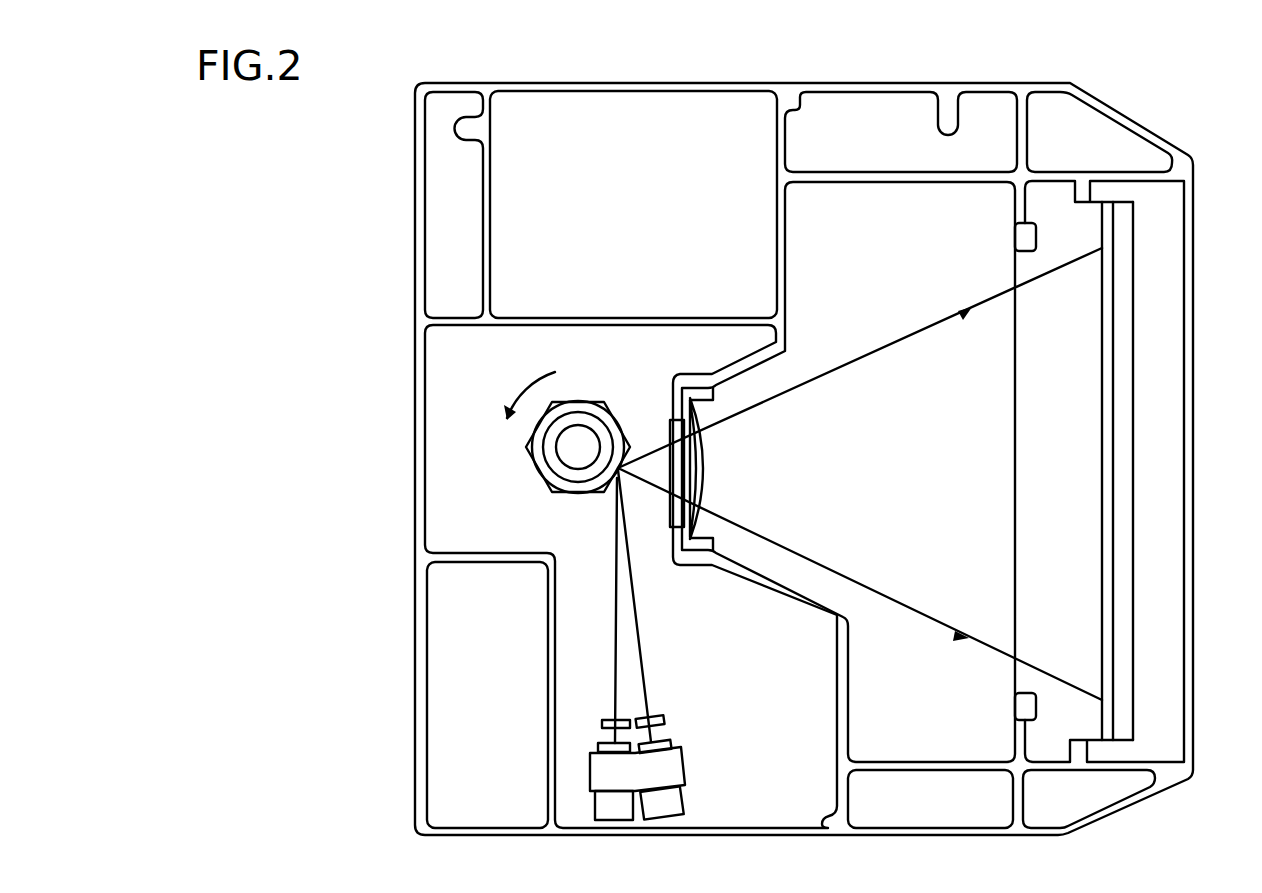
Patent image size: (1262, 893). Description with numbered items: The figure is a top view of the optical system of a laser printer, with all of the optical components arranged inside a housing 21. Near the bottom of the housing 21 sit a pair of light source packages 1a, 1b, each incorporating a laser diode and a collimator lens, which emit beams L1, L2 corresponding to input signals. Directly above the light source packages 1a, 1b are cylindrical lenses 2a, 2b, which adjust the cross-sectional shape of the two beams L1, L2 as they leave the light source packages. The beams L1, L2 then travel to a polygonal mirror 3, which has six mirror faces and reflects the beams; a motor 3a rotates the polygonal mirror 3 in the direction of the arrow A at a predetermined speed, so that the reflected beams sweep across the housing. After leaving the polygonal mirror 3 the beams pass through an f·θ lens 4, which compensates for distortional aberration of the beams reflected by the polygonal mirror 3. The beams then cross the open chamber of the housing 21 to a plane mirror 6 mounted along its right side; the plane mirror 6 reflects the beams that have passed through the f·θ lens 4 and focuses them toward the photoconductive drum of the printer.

The housing 21 is at (415, 453).
The plane mirror 6 is at (1123, 258).
The f·θ lens 4 is at (697, 420).
The polygonal mirror 3 is at (540, 465).
The motor 3a is at (578, 398).
The arrow A is at (530, 383).
The beam L1 is at (613, 597).
The beam L2 is at (634, 594).
The cylindrical lens 2a is at (610, 717).
The cylindrical lens 2b is at (657, 715).
The light source package 1a is at (580, 772).
The light source package 1b is at (695, 760).